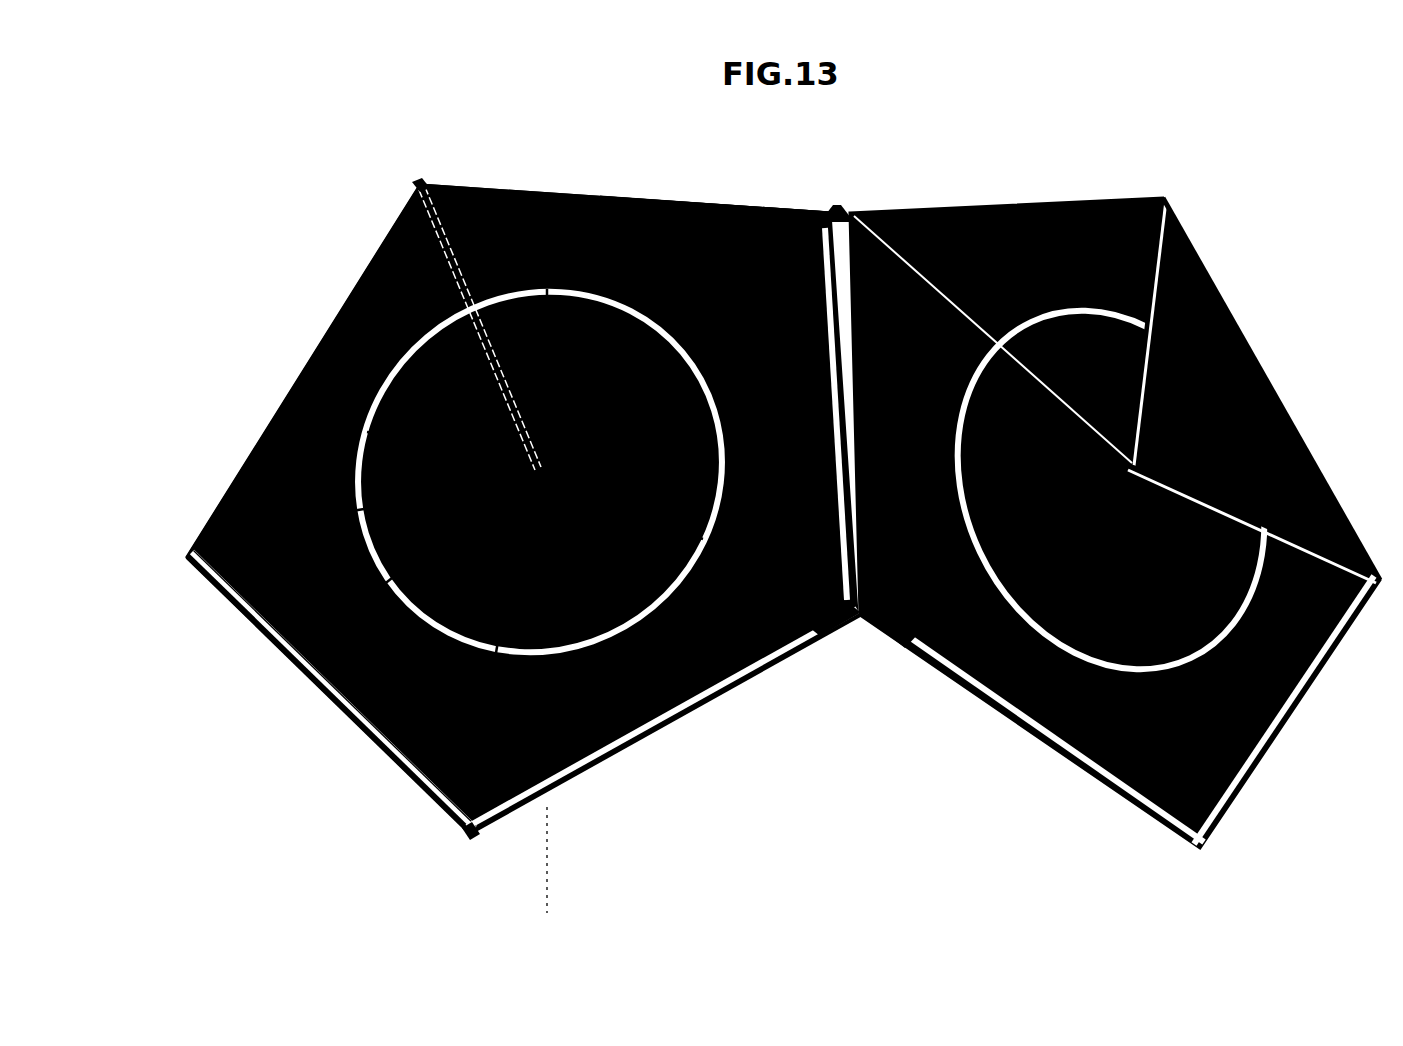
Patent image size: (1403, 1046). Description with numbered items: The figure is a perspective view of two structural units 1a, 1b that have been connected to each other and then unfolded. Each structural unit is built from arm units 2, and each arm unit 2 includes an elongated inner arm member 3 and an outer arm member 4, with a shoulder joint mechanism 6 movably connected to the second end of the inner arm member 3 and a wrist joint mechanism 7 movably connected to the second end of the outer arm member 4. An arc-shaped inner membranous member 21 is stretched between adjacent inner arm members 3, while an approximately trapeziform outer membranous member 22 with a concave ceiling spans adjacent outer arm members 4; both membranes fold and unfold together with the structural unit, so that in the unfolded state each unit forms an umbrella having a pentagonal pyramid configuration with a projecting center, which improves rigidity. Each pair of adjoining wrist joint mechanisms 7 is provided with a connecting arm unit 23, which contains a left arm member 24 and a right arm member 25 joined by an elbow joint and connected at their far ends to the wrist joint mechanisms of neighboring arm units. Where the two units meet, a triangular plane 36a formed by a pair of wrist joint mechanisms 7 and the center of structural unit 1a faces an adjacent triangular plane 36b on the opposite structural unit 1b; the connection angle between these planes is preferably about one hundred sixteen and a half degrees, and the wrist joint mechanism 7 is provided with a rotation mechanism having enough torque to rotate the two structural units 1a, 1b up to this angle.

The structural unit 1a is at (768, 212).
The structural unit 1b is at (1057, 207).
The arm unit 2 is at (515, 195).
The inner arm member 3 is at (622, 205).
The outer arm member 4 is at (441, 192).
The shoulder joint mechanism 6 is at (292, 415).
The wrist joint mechanism 7 is at (420, 186).
The inner membranous member 21 is at (252, 610).
The outer membranous member 22 is at (345, 697).
The connecting arm unit 23 is at (637, 747).
The left arm member 24 is at (533, 805).
The right arm member 25 is at (738, 692).
The triangular plane 36a is at (812, 628).
The triangular plane 36b is at (935, 648).